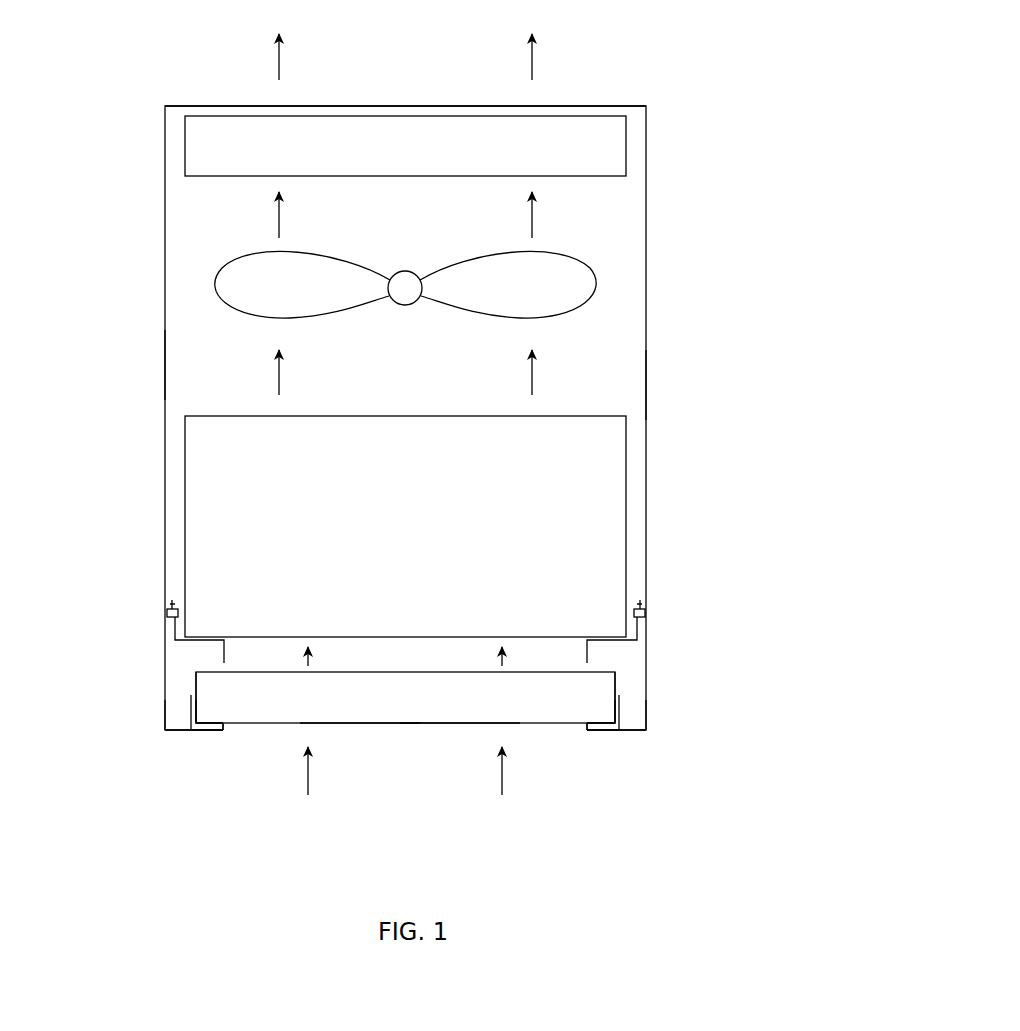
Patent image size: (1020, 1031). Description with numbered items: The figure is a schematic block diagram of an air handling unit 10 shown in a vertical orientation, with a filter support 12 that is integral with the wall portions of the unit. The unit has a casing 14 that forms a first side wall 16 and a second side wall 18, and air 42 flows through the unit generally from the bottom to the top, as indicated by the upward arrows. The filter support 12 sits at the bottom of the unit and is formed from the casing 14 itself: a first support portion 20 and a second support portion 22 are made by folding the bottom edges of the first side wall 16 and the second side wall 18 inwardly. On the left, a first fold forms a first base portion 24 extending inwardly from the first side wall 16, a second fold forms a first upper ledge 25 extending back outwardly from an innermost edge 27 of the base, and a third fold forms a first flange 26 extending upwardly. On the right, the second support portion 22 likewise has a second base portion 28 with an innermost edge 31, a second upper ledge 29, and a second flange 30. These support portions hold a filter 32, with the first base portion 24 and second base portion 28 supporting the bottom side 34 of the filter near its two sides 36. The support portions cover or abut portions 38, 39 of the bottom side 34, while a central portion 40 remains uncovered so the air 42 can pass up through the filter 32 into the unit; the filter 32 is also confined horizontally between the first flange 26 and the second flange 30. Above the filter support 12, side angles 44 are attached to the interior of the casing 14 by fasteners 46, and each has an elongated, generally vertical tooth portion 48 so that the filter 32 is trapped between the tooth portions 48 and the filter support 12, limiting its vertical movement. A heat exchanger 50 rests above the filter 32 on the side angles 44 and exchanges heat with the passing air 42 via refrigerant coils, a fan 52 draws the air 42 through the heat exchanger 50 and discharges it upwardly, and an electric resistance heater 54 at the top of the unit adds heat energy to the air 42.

The air handling unit 10 is at (706, 74).
The filter support 12 is at (170, 731).
The casing 14 is at (646, 283).
The first side wall 16 is at (165, 366).
The second side wall 18 is at (646, 387).
The first support portion 20 is at (194, 748).
The second support portion 22 is at (618, 748).
The first base portion 24 is at (225, 731).
The first upper ledge 25 is at (222, 722).
The first flange 26 is at (191, 713).
The innermost edge 27 is at (225, 729).
The second base portion 28 is at (590, 732).
The second upper ledge 29 is at (592, 722).
The second flange 30 is at (619, 713).
The innermost edge 31 is at (585, 730).
The filter 32 is at (422, 705).
The bottom side 34 is at (368, 723).
The sides 36 is at (196, 690).
The portion 38 is at (218, 722).
The portion 39 is at (590, 722).
The uncovered portion 40 is at (445, 723).
The air 42 is at (505, 775).
The side angles 44 is at (167, 613).
The fasteners 46 is at (172, 606).
The tooth portion 48 is at (222, 655).
The heat exchanger 50 is at (626, 494).
The fan 52 is at (556, 316).
The electric resistance heater 54 is at (626, 143).